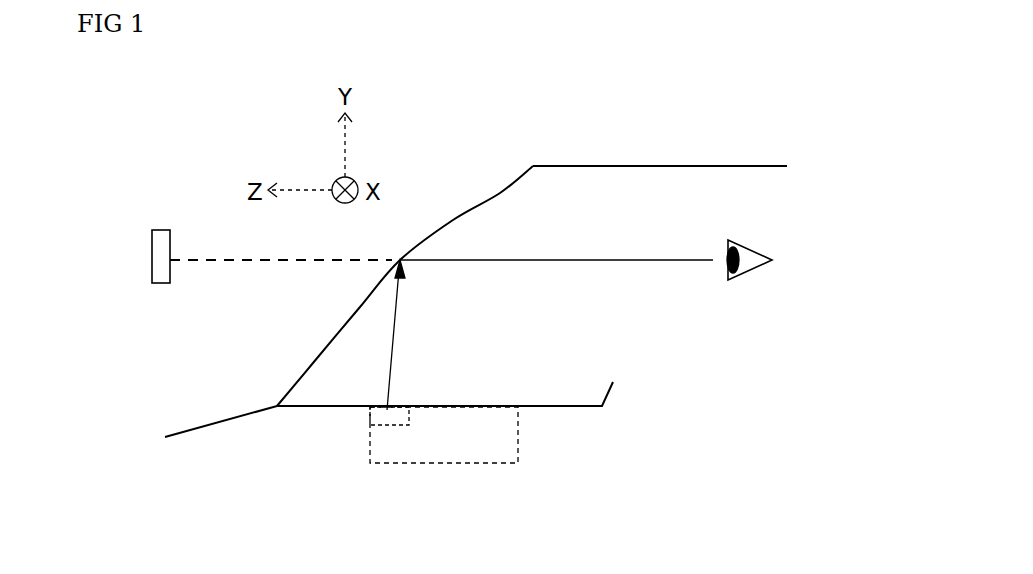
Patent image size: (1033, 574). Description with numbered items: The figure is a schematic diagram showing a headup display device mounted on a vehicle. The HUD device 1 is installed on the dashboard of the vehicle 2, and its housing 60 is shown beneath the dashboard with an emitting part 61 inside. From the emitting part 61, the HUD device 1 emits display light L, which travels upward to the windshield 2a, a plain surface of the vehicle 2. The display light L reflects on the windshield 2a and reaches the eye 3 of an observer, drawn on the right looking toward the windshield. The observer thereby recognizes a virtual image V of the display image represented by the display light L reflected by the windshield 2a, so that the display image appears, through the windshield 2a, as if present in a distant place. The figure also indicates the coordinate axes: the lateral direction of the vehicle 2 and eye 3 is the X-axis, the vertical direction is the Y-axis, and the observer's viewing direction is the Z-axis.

The HUD device 1 is at (389, 465).
The vehicle 2 is at (532, 240).
The windshield 2a is at (515, 174).
The eye 3 is at (758, 252).
The housing 60 is at (518, 437).
The emitting part 61 is at (385, 425).
The display light L is at (397, 310).
The virtual image V is at (161, 230).